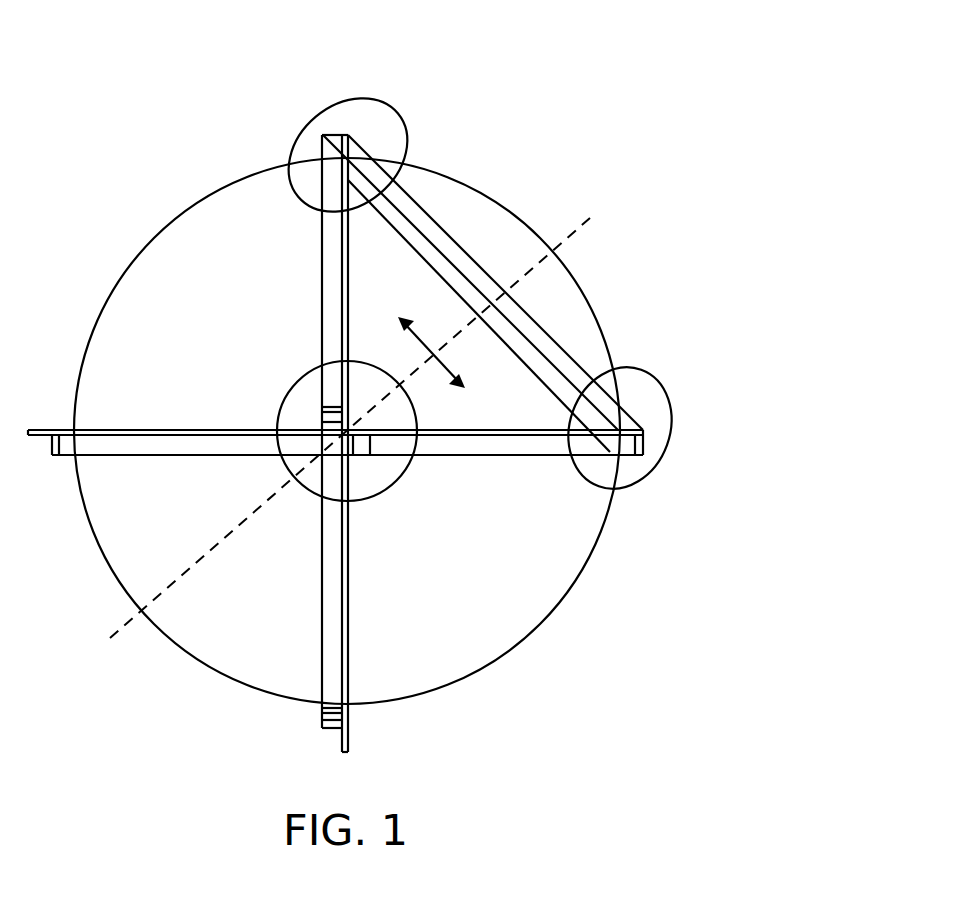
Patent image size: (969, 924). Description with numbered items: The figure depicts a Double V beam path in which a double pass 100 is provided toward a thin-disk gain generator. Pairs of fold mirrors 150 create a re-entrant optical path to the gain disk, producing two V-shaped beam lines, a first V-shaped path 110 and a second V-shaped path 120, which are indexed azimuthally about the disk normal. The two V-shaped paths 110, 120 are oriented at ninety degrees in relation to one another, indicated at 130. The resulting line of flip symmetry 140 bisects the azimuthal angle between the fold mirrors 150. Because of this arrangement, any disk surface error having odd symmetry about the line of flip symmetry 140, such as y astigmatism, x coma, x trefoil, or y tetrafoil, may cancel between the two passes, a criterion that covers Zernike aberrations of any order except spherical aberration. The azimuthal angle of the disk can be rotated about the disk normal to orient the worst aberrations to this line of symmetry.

The double pass 100 is at (156, 80).
The first V-shaped path 110 is at (330, 262).
The second V-shaped path 120 is at (517, 443).
The ninety-degree orientation 130 is at (357, 413).
The line of flip symmetry 140 is at (597, 221).
The fold mirrors 150 is at (381, 113).